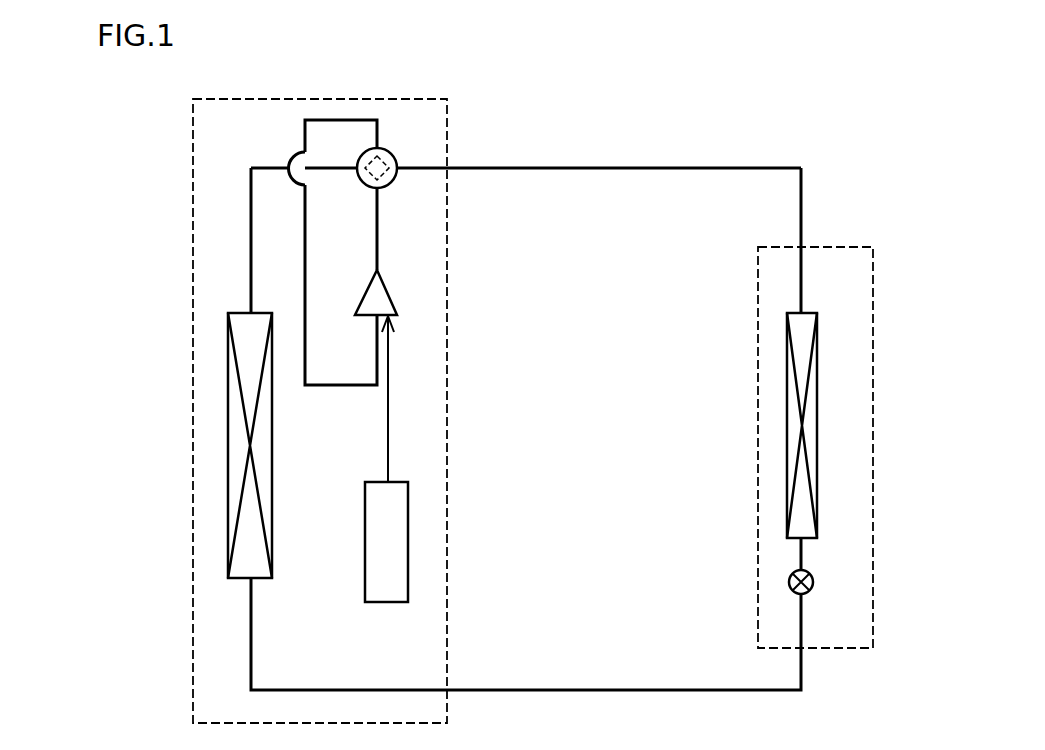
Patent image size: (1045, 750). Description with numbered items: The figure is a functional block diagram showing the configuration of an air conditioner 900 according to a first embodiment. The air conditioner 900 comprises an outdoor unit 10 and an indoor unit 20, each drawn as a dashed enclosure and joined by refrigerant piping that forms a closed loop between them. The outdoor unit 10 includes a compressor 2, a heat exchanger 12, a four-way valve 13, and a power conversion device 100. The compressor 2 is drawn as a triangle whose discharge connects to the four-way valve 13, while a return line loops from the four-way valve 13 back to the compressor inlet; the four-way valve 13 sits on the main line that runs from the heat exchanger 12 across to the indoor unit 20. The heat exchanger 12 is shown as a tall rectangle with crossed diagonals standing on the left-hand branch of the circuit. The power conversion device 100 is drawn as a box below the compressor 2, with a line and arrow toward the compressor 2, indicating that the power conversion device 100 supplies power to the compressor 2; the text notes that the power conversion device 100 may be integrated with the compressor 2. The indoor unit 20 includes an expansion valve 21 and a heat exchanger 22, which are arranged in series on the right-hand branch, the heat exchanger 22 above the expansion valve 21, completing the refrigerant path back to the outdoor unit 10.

The air conditioner 900 is at (176, 85).
The outdoor unit 10 is at (388, 99).
The four-way valve 13 is at (392, 152).
The heat exchanger 12 is at (240, 313).
The compressor 2 is at (388, 296).
The power conversion device 100 is at (365, 543).
The indoor unit 20 is at (826, 247).
The heat exchanger 22 is at (808, 313).
The expansion valve 21 is at (811, 590).